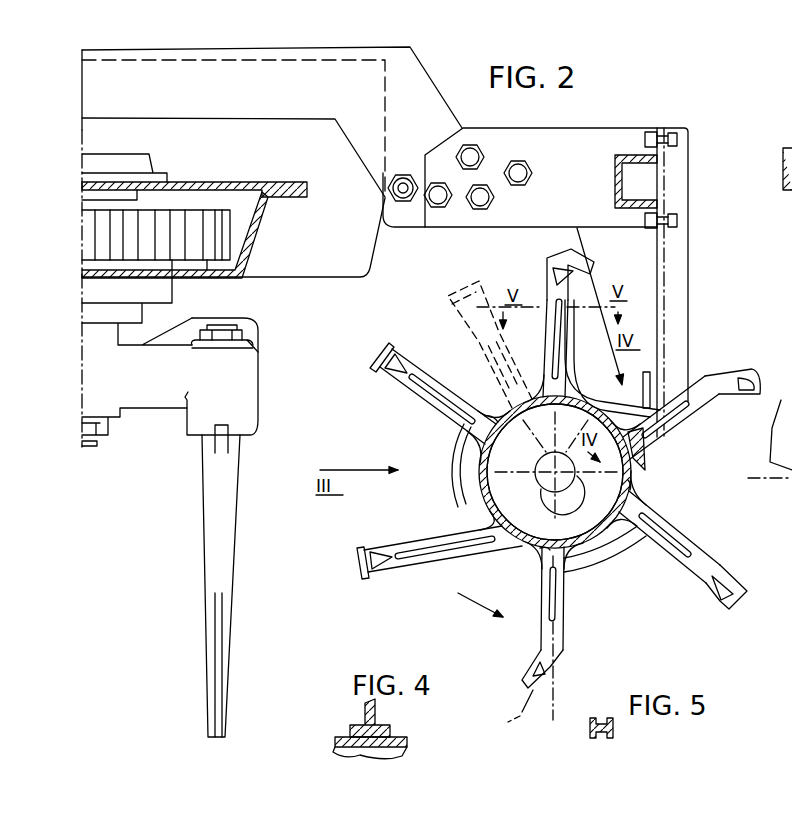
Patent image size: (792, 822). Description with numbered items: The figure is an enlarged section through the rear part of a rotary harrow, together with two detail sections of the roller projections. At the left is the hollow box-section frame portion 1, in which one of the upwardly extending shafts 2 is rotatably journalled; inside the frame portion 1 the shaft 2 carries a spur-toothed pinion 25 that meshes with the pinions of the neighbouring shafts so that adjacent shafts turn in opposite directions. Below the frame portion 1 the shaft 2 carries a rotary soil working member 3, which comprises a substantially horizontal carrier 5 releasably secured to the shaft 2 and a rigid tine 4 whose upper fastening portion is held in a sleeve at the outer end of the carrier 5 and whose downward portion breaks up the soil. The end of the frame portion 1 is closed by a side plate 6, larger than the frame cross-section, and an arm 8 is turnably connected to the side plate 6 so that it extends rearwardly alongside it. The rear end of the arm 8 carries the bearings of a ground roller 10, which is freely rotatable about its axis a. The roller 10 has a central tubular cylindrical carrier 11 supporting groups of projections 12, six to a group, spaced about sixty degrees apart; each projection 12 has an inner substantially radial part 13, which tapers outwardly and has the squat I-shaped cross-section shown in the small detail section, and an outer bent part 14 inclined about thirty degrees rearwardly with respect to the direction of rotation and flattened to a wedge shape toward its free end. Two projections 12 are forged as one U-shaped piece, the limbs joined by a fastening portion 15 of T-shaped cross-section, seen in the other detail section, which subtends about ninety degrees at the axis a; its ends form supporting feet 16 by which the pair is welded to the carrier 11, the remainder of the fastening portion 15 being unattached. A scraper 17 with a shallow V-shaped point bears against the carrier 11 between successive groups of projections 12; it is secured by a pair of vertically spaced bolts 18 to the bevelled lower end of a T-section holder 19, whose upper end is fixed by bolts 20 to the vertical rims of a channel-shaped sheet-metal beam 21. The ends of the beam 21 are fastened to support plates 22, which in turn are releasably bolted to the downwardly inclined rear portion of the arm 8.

In FIG. 2, the hollow box-section frame portion 1 is at (268, 186).
In FIG. 2, the upwardly extending shaft 2 is at (108, 204).
In FIG. 2, the rotary soil working member 3 is at (142, 486).
In FIG. 2, the tine 4 is at (205, 529).
In FIG. 2, the carrier 5 is at (178, 408).
In FIG. 2, the side plate 6 is at (312, 278).
In FIG. 2, the arm 8 is at (352, 150).
In FIG. 2, the ground roller 10 is at (510, 579).
In FIG. 2, the cylindrical carrier 11 is at (503, 533).
In FIG. 4, the cylindrical carrier 11 is at (407, 743).
In FIG. 2, the projection 12 is at (703, 405).
In FIG. 2, the inner radial part 13 is at (548, 318).
In FIG. 5, the inner radial part 13 is at (587, 728).
In FIG. 2, the outer bent part 14 is at (383, 379).
In FIG. 2, the fastening portion 15 is at (467, 469).
In FIG. 4, the fastening portion 15 is at (362, 717).
In FIG. 2, the supporting foot 16 is at (490, 415).
In FIG. 2, the scraper 17 is at (643, 462).
In FIG. 2, the bolt 18 is at (645, 382).
In FIG. 2, the holder 19 is at (685, 277).
In FIG. 2, the bolt 20 is at (678, 140).
In FIG. 2, the beam 21 is at (615, 166).
In FIG. 2, the support plate 22 is at (485, 228).
In FIG. 2, the pinion 25 is at (205, 279).
In FIG. 2, the axis a is at (572, 482).